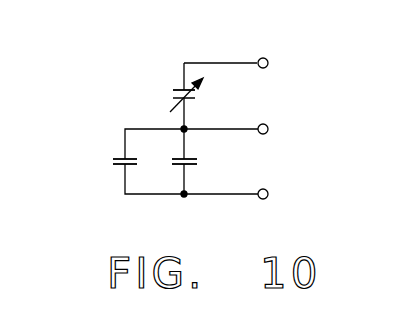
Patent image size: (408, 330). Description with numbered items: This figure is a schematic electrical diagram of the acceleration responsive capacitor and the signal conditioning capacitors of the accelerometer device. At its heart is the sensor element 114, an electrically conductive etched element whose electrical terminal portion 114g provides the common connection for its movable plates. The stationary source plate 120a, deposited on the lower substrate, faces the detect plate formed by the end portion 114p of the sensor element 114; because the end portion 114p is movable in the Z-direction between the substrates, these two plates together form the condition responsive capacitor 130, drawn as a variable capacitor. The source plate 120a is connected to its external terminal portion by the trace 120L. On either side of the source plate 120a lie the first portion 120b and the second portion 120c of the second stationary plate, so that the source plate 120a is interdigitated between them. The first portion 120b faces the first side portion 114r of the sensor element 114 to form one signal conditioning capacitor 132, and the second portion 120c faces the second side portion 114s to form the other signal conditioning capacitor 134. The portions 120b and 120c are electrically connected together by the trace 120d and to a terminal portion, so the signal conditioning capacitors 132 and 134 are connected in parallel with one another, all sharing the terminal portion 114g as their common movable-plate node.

The sensor element 114 is at (184, 123).
The electrical terminal portion 114g is at (288, 128).
The end portion 114p is at (192, 99).
The first side portion 114r is at (122, 158).
The second side portion 114s is at (190, 160).
The trace 120L is at (235, 63).
The source plate 120a is at (180, 92).
The first portion of second stationary plate 120b is at (131, 166).
The second portion of second stationary plate 120c is at (190, 167).
The trace 120d is at (245, 194).
The condition responsive capacitor 130 is at (151, 101).
The signal conditioning capacitor 132 is at (117, 182).
The signal conditioning capacitor 134 is at (195, 180).